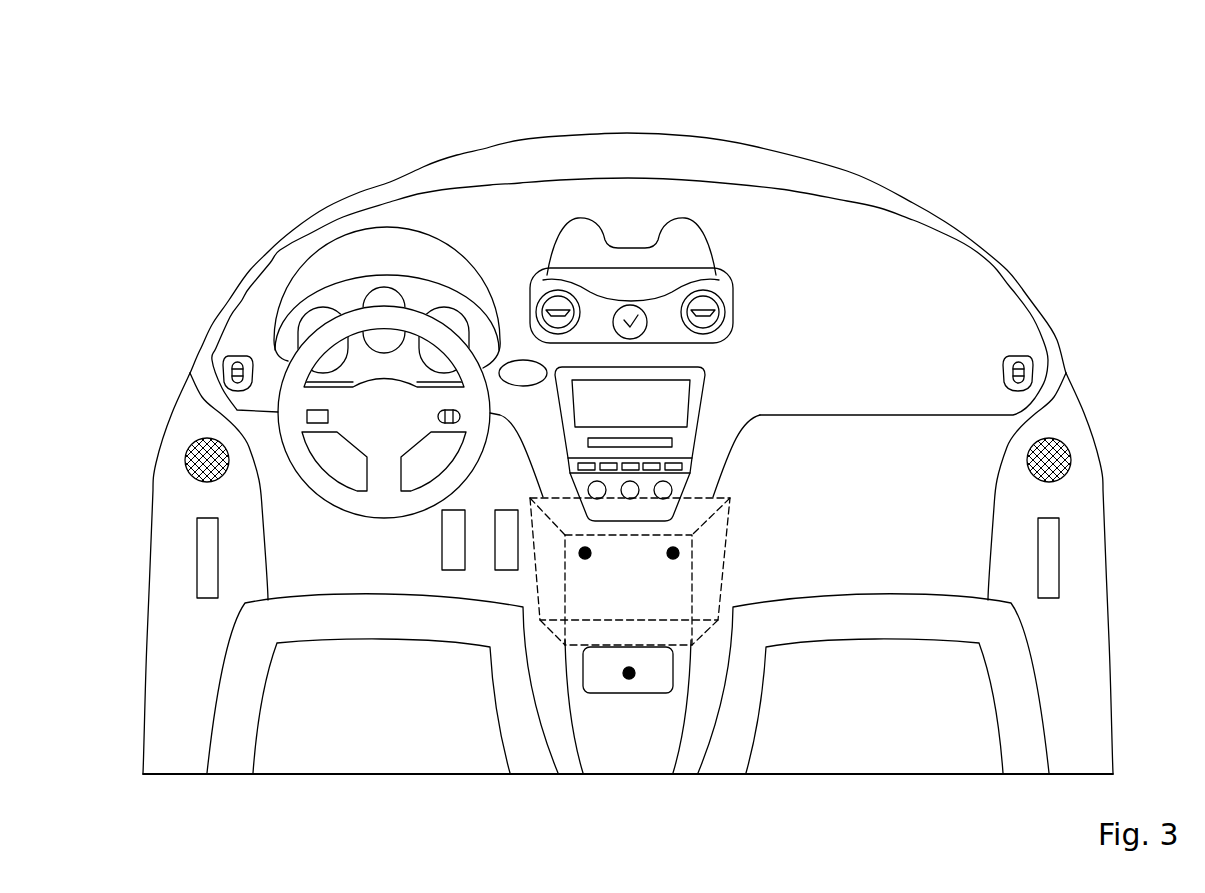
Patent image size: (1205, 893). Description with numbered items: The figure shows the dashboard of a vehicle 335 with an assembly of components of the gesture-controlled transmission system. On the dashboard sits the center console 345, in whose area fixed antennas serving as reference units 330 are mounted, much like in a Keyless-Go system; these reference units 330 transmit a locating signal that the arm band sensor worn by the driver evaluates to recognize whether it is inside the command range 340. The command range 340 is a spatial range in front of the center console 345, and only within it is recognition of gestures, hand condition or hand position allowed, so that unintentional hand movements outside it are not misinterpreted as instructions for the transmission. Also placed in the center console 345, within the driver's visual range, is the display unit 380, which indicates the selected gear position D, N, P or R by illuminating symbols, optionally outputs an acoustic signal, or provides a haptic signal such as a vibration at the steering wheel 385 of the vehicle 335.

The vehicle 335 is at (830, 183).
The steering wheel 385 is at (467, 363).
The display unit 380 is at (652, 360).
The center console 345 is at (706, 478).
The command range 340 is at (535, 573).
The reference unit 330 is at (585, 560).